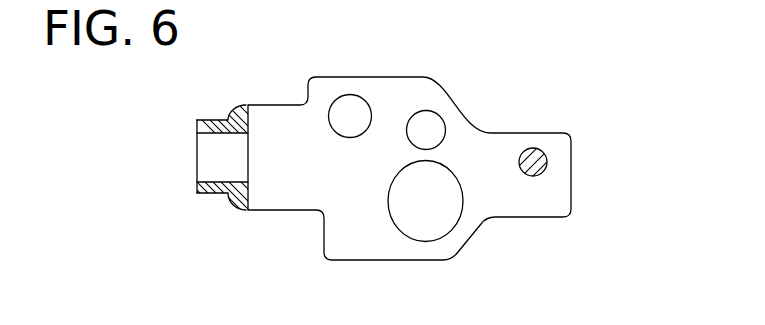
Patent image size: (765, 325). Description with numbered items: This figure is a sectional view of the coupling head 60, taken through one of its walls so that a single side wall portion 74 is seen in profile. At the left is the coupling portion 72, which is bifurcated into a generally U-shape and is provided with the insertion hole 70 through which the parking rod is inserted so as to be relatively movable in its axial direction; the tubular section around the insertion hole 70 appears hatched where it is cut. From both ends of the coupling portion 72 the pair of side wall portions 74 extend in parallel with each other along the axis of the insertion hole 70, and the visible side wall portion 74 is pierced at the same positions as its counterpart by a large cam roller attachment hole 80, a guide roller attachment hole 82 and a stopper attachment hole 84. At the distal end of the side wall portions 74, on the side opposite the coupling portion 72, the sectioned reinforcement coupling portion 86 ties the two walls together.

The coupling head 60 is at (502, 78).
The insertion hole 70 is at (212, 181).
The coupling portion 72 is at (243, 113).
The side wall portions 74 is at (363, 240).
The cam roller attachment hole 80 is at (462, 208).
The guide roller attachment hole 82 is at (329, 113).
The stopper attachment hole 84 is at (408, 129).
The reinforcement coupling portion 86 is at (529, 150).